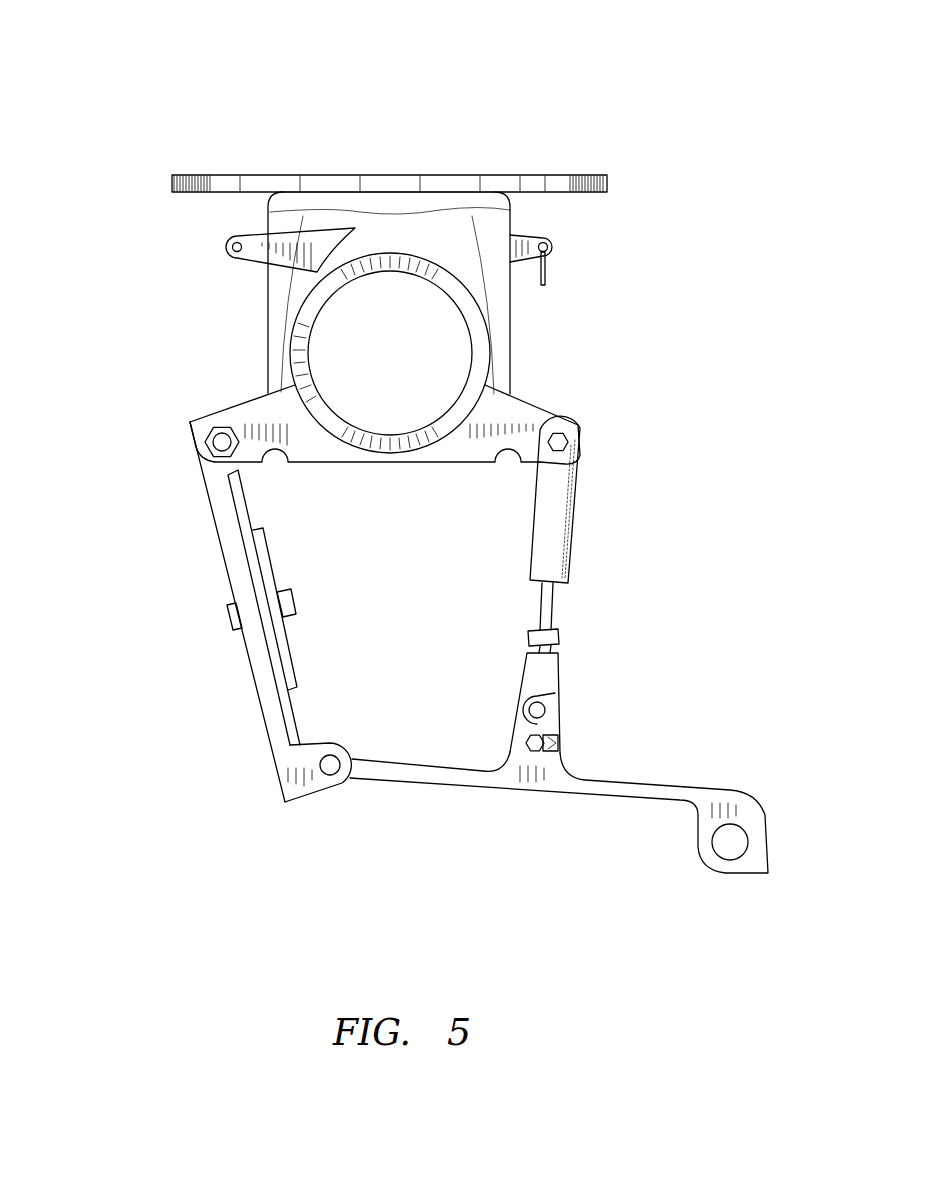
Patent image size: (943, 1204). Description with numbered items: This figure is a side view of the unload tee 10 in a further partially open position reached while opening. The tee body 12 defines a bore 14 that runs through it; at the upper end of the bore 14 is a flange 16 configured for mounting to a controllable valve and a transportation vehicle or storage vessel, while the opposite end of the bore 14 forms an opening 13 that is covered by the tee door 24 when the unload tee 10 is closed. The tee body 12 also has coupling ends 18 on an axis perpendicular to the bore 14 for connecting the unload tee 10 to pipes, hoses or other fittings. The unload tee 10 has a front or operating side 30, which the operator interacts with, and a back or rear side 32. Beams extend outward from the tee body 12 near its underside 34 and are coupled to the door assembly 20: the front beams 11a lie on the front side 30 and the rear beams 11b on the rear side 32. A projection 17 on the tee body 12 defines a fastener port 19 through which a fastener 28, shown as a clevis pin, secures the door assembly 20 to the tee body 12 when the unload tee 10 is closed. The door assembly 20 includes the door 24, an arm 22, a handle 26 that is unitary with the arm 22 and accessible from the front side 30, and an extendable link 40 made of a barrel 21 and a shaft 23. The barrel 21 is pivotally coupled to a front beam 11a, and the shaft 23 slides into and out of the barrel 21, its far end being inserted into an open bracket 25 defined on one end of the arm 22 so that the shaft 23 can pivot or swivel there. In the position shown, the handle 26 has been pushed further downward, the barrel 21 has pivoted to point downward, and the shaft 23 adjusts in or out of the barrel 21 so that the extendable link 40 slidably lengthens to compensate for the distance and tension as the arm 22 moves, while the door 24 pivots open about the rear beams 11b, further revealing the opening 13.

The unload tee 10 is at (116, 44).
The front beams 11a is at (548, 412).
The rear beams 11b is at (200, 445).
The tee body 12 is at (266, 315).
The opening 13 is at (342, 478).
The bore 14 is at (402, 165).
The flange 16 is at (565, 178).
The projection 17 is at (548, 240).
The coupling ends 18 is at (290, 355).
The fastener port 19 is at (549, 252).
The door assembly 20 is at (219, 767).
The barrel 21 is at (577, 500).
The arm 22 is at (428, 782).
The shaft 23 is at (555, 608).
The tee door 24 is at (245, 668).
The open bracket 25 is at (550, 695).
The handle 26 is at (770, 825).
The fastener 28 is at (548, 280).
The front side 30 is at (672, 436).
The rear side 32 is at (85, 489).
The underside 34 is at (375, 522).
The extendable link 40 is at (597, 528).